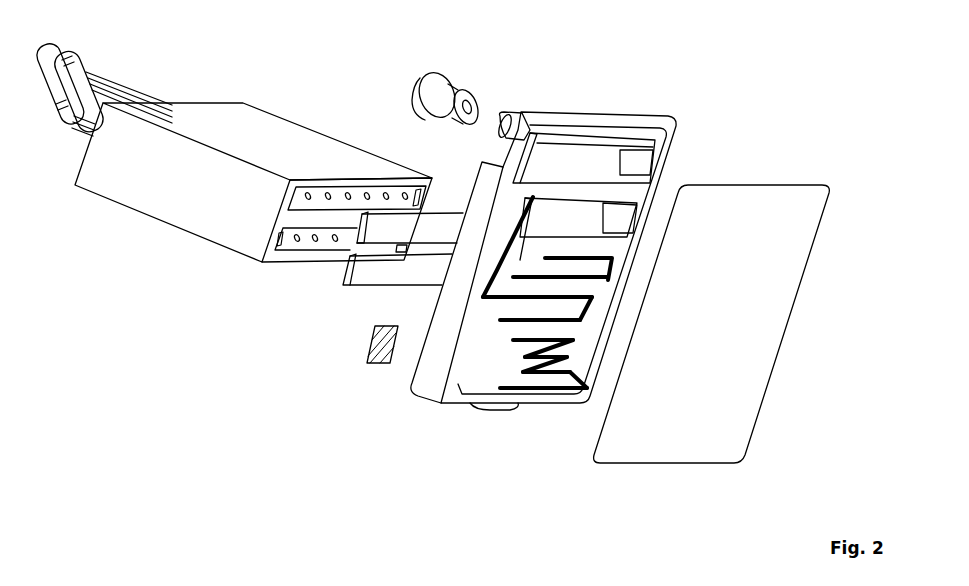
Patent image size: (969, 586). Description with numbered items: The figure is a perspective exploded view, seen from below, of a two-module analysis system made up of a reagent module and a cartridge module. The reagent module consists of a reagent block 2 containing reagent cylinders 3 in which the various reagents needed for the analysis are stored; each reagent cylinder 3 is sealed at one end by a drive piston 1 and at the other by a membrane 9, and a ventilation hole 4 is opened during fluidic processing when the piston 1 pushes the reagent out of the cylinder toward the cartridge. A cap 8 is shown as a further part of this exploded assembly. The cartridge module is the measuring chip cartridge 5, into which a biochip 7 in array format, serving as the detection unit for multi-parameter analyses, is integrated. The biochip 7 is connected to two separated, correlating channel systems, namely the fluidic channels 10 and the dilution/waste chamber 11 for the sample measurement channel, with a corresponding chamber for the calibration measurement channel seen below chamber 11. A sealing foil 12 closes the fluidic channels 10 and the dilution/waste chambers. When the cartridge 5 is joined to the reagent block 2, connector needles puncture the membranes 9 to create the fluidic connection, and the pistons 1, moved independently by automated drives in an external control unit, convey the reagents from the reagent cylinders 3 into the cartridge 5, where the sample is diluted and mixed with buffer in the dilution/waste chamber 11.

The piston 1 is at (120, 70).
The reagent block 2 is at (178, 231).
The reagent cylinder 3 is at (307, 248).
The ventilation hole 4 is at (386, 165).
The cartridge 5 is at (418, 405).
The biochip 7 is at (370, 340).
The cap 8 is at (447, 67).
The membrane 9 is at (343, 280).
The fluidic channels 10 is at (547, 372).
The dilution/waste chamber 11 is at (620, 153).
The sealing foil 12 is at (648, 442).